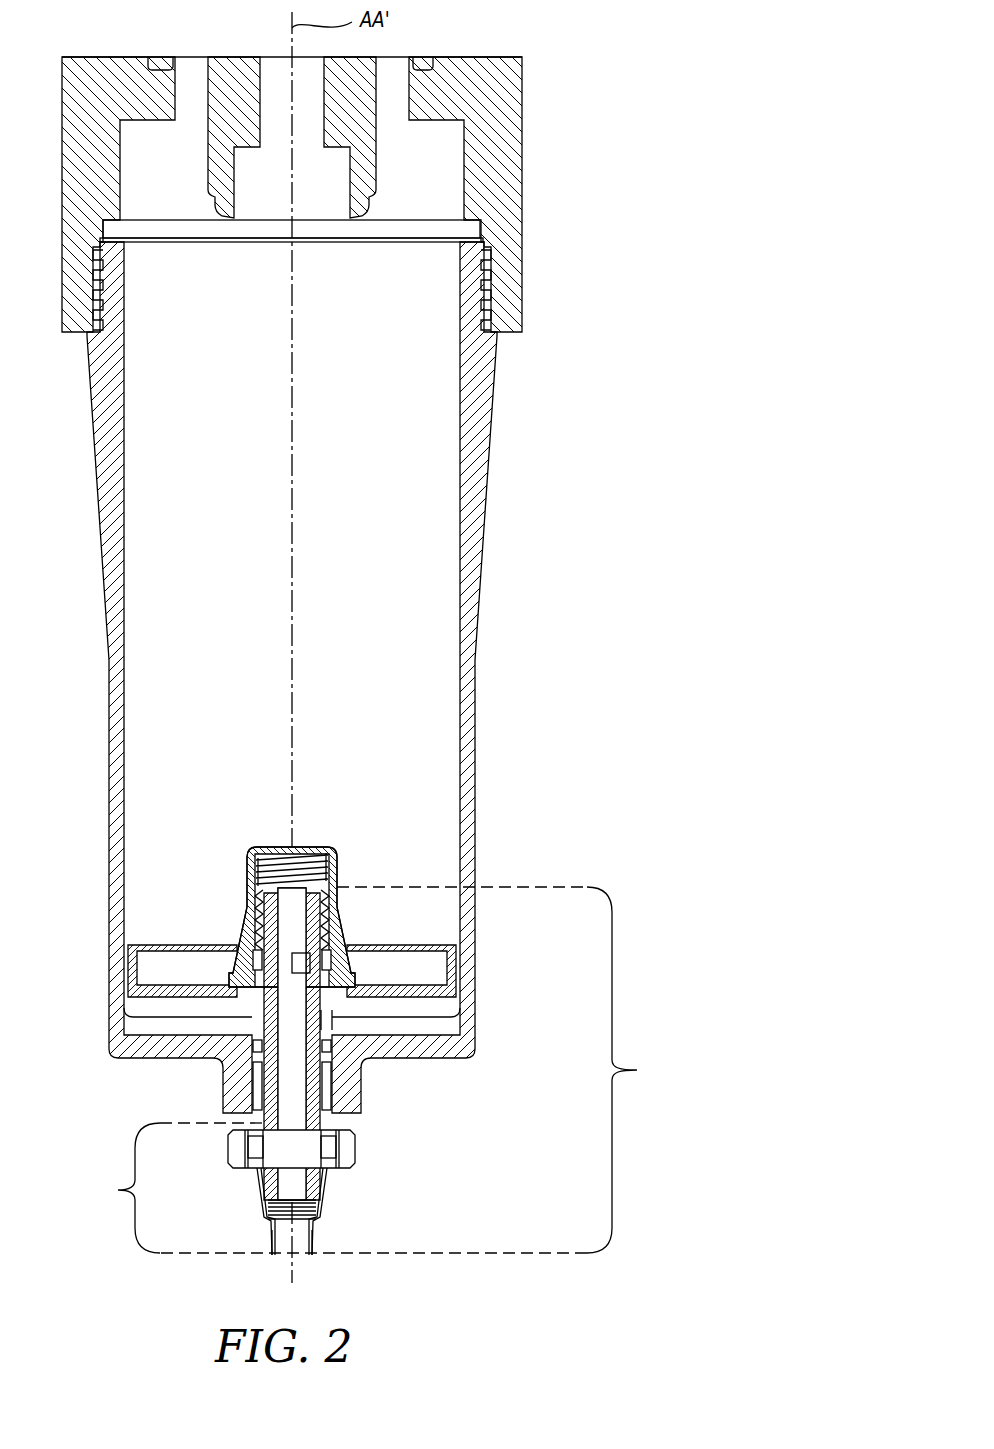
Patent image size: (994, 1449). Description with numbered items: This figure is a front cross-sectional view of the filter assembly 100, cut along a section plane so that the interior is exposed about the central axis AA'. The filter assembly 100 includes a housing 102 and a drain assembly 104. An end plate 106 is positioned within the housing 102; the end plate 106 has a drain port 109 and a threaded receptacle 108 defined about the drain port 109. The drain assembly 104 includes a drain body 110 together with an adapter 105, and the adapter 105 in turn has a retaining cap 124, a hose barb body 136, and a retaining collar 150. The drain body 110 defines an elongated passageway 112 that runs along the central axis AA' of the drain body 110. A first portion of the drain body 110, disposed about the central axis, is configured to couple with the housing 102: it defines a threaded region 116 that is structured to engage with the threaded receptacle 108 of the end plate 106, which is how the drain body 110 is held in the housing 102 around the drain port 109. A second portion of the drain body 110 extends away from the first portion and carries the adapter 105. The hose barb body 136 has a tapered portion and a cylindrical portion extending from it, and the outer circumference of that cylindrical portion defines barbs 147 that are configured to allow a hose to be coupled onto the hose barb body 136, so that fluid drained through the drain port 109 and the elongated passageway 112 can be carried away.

The filter assembly 100 is at (568, 52).
The housing 102 is at (497, 385).
The drain assembly 104 is at (422, 1070).
The adapter 105 is at (175, 1188).
The end plate 106 is at (455, 988).
The threaded receptacle 108 is at (337, 873).
The drain port 109 is at (330, 925).
The drain body 110 is at (330, 1020).
The elongated passageway 112 is at (296, 1067).
The threaded region 116 is at (333, 905).
The retaining cap 124 is at (358, 1140).
The hose barb body 136 is at (326, 1208).
The barbs 147 is at (272, 1237).
The retaining collar 150 is at (333, 1175).